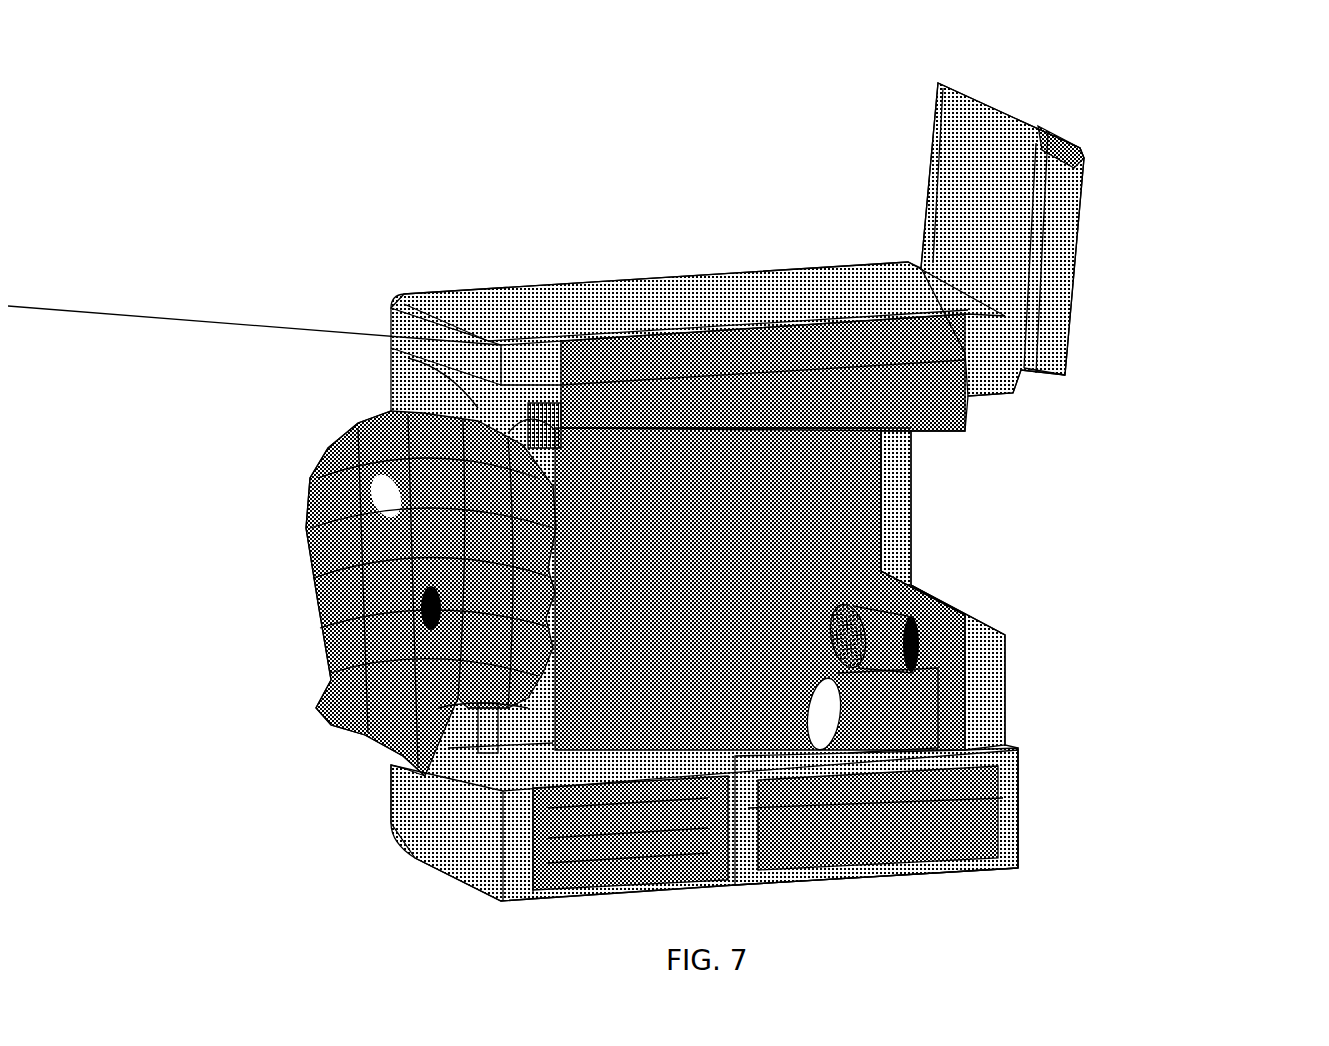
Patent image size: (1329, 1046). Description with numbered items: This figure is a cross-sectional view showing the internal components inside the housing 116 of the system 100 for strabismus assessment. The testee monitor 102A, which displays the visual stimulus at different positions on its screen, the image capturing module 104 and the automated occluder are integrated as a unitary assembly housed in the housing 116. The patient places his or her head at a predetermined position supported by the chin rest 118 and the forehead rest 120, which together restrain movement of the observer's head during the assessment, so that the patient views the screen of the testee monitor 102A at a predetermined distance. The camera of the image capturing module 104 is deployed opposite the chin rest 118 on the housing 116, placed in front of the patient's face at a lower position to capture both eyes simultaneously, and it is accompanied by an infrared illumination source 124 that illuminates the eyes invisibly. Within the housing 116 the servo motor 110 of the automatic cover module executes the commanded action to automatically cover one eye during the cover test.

The system for strabismus assessment 100 is at (1219, 131).
The testee monitor 102A is at (1040, 245).
The image capturing module 104 is at (997, 632).
The servo motor 110 is at (548, 817).
The housing 116 is at (665, 290).
The chin rest 118 is at (383, 757).
The forehead rest 120 is at (515, 418).
The infrared illumination source 124 is at (997, 735).